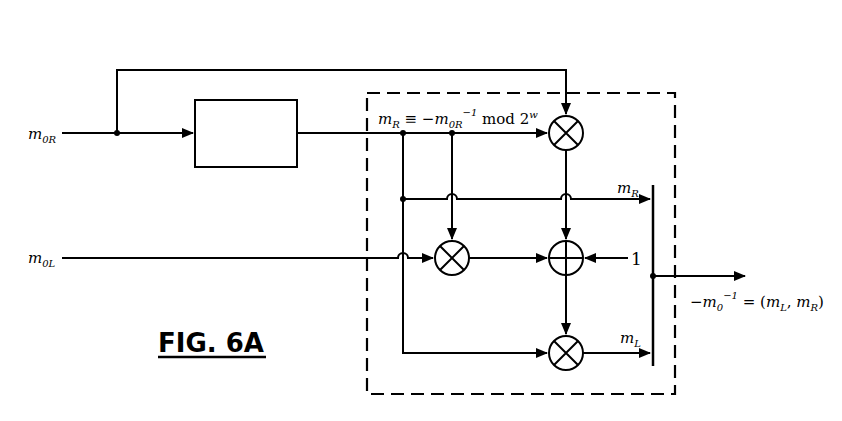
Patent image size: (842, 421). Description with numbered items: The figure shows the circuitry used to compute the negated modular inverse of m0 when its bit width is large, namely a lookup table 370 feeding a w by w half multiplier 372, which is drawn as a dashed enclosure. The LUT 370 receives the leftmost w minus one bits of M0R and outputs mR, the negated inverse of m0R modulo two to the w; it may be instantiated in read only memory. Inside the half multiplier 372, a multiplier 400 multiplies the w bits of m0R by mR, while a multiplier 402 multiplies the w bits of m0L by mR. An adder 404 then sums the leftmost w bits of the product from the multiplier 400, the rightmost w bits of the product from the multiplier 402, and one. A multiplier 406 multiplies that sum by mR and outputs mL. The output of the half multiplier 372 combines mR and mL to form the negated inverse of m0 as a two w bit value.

The lookup table (LUT) 370 is at (195, 157).
The half multiplier 372 is at (675, 118).
The multiplier 400 is at (583, 133).
The multiplier 402 is at (452, 275).
The adder 404 is at (554, 247).
The multiplier 406 is at (556, 366).